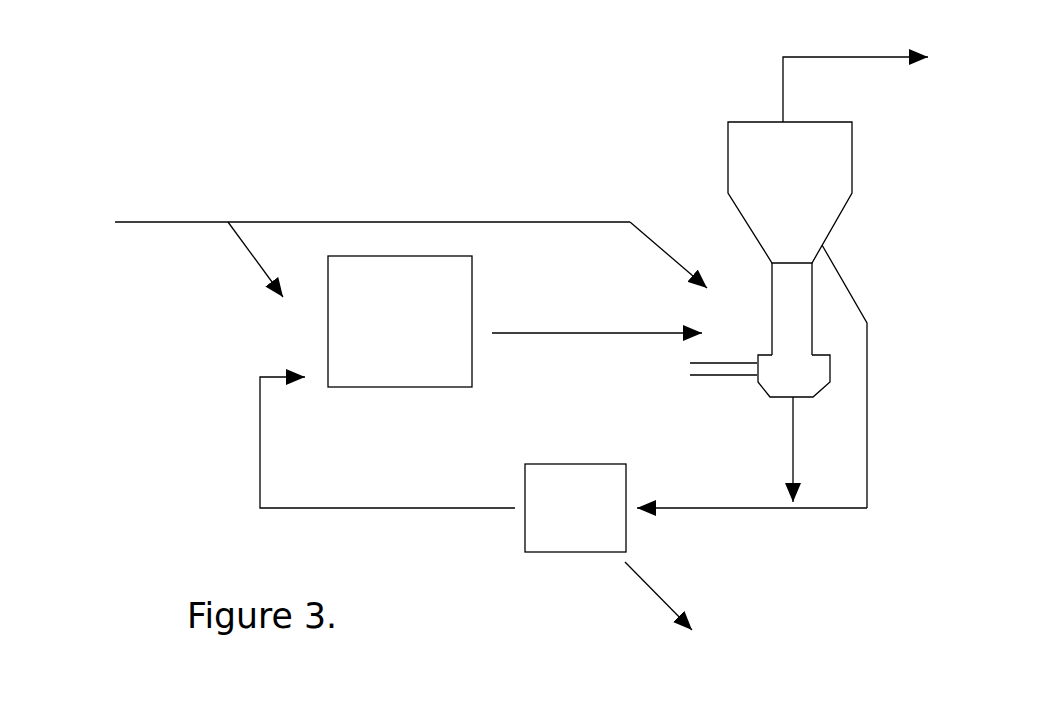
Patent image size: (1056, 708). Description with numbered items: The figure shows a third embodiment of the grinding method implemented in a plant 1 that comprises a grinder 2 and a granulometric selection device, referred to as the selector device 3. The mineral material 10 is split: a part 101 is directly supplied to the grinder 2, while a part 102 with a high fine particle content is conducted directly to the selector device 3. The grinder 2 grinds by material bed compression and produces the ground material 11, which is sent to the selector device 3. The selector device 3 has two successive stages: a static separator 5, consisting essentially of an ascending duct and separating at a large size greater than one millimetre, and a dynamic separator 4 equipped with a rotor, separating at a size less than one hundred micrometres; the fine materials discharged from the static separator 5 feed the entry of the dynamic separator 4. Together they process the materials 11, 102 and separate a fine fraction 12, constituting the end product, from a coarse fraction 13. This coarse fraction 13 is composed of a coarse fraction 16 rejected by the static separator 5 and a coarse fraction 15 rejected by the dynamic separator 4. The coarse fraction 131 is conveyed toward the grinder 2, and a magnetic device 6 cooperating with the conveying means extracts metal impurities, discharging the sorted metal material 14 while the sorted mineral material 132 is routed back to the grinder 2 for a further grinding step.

The plant 1 is at (122, 109).
The grinder 2 is at (400, 321).
The selector device 3 is at (916, 267).
The dynamic separator 4 is at (790, 238).
The static separator 5 is at (760, 376).
The magnetic device 6 is at (575, 508).
The mineral material 10 is at (372, 200).
The ground material 11 is at (597, 311).
The fine fraction 12 is at (855, 67).
The coarse fraction 13 is at (563, 466).
The sorted metal material 14 is at (655, 598).
The coarse fraction rejected by the dynamic separator 15 is at (866, 376).
The coarse fraction rejected by the static separator 16 is at (765, 449).
The part of the mineral material 101 is at (228, 267).
The part of the mineral material 102 is at (648, 237).
The coarse fraction 131 is at (752, 531).
The sorted mineral material 132 is at (387, 466).